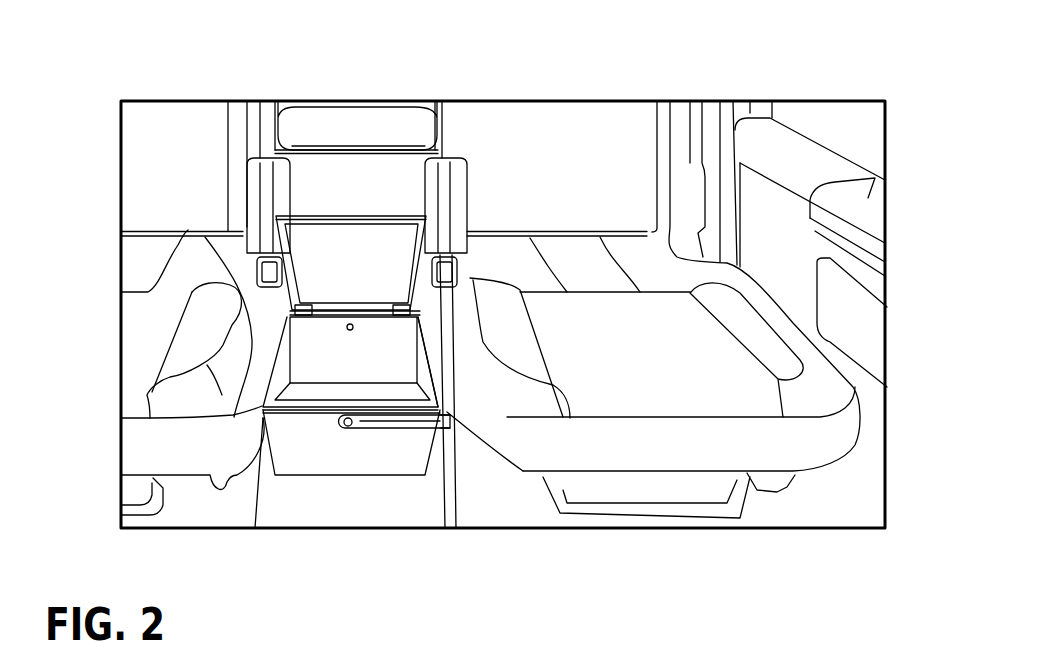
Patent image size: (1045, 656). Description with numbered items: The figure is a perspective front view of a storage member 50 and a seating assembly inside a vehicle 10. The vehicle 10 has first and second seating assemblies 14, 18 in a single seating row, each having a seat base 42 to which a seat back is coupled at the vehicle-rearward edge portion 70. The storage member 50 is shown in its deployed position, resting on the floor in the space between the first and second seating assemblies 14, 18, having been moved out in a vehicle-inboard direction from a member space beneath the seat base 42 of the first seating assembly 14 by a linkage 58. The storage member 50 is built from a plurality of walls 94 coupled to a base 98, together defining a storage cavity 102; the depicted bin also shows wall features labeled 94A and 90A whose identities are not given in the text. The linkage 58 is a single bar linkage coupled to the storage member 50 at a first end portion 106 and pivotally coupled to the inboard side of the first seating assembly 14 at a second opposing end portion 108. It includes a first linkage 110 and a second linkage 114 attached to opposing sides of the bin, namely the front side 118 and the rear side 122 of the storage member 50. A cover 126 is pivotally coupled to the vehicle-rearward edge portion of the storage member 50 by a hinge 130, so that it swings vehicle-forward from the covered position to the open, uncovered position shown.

The vehicle 10 is at (742, 70).
The first seating assembly 14 is at (757, 248).
The second seating assembly 18 is at (110, 203).
The seat base 42 is at (827, 362).
The storage member 50 is at (283, 502).
The linkage 58 is at (375, 442).
The vehicle-rearward edge portion 70 is at (403, 258).
The armrest support 90A is at (425, 150).
The wall 94 is at (275, 432).
The base front wall 94A is at (250, 408).
The base 98 is at (312, 393).
The storage cavity 102 is at (305, 335).
The first end portion 106 is at (353, 432).
The second opposing end portion 108 is at (445, 423).
The first linkage 110 is at (398, 420).
The second linkage 114 is at (403, 346).
The front side 118 is at (268, 415).
The rear side 122 is at (310, 361).
The cover 126 is at (311, 253).
The hinge 130 is at (418, 328).